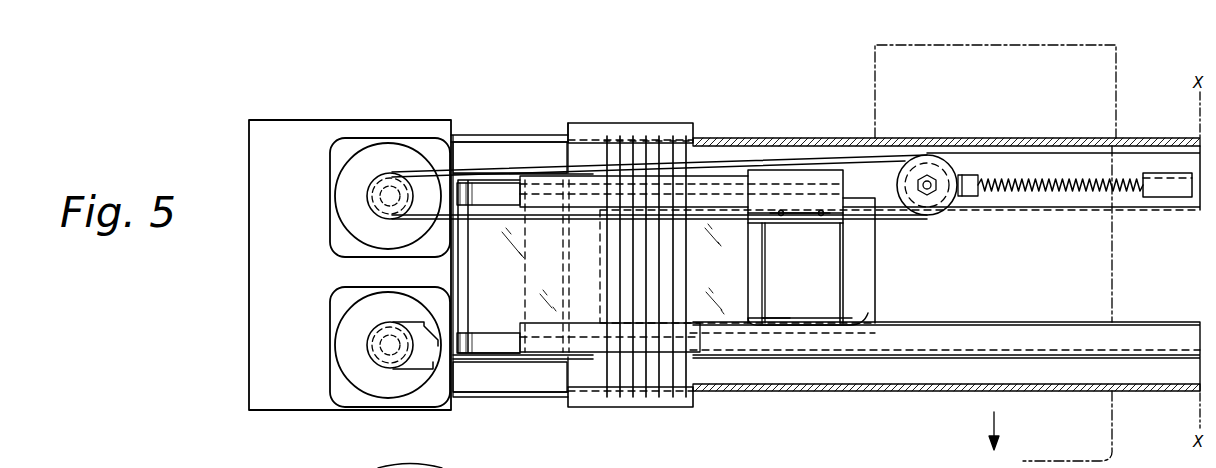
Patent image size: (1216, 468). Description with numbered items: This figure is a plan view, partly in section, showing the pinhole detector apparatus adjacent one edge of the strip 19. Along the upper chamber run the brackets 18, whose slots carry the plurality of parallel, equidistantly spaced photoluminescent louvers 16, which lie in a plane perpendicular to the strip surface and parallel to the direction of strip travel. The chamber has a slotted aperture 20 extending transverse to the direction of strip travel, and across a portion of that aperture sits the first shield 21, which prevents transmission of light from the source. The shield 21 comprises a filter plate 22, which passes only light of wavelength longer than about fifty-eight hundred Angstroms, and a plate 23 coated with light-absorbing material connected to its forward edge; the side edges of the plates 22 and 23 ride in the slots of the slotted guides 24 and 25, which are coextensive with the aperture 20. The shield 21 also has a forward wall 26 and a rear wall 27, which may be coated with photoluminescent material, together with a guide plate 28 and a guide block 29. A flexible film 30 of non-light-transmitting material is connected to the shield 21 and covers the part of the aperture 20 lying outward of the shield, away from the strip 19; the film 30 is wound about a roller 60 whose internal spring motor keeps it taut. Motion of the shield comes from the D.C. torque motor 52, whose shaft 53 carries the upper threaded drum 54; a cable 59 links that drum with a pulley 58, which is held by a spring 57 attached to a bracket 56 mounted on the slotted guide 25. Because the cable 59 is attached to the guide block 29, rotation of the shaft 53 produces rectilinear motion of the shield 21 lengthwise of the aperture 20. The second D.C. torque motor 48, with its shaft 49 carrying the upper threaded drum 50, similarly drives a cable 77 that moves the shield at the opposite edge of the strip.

The photoluminescent louvers 16 is at (607, 155).
The brackets 18 is at (578, 123).
The strip 19 is at (875, 88).
The slotted aperture 20 is at (1160, 272).
The first shield 21 is at (813, 272).
The filter plate 22 is at (834, 244).
The light-absorbing plate 23 is at (874, 277).
The slotted guide 24 is at (1033, 322).
The slotted guide 25 is at (1076, 200).
The forward wall 26 is at (842, 293).
The rear wall 27 is at (770, 247).
The guide plate 28 is at (778, 318).
The guide block 29 is at (746, 189).
The flexible film 30 is at (722, 272).
The D.C. torque motor 48 is at (335, 350).
The motor shaft 49 is at (392, 369).
The upper threaded drum 50 is at (393, 323).
The D.C. torque motor 52 is at (337, 195).
The motor shaft 53 is at (392, 218).
The upper threaded drum 54 is at (391, 174).
The bracket 56 is at (1155, 172).
The spring 57 is at (1058, 180).
The pulley 58 is at (957, 169).
The cable 59 is at (740, 157).
The roller 60 is at (494, 346).
The cable 77 is at (418, 345).